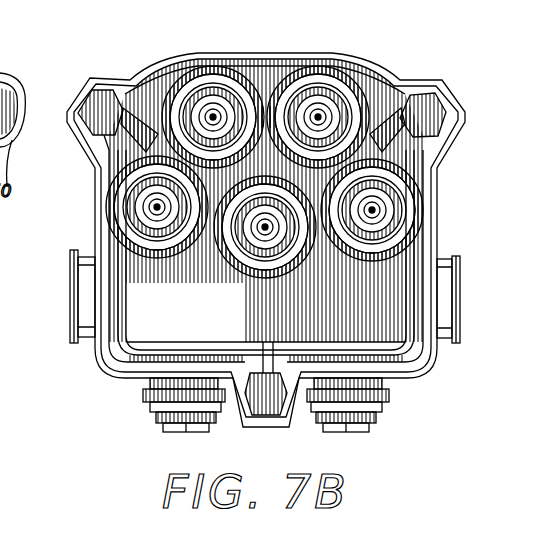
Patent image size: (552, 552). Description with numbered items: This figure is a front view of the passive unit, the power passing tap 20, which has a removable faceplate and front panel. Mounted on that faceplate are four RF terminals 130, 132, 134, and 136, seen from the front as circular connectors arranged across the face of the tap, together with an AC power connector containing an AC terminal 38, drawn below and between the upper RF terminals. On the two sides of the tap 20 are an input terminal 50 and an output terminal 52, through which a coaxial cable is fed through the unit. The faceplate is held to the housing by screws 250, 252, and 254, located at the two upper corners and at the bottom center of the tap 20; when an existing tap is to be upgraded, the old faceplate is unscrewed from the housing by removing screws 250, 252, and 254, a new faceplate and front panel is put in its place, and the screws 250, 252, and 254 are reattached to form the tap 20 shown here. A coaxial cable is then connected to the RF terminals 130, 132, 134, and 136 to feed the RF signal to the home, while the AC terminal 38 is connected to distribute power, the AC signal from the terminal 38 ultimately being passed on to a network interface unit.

The power passing tap 20 is at (6, 39).
The screw 250 is at (100, 102).
The screw 252 is at (418, 93).
The screw 254 is at (263, 400).
The RF terminal 132 is at (214, 115).
The RF terminal 134 is at (319, 115).
The RF terminal 130 is at (158, 210).
The RF terminal 136 is at (375, 210).
The AC terminal 38 is at (265, 229).
The input terminal 50 is at (68, 321).
The output terminal 52 is at (466, 258).